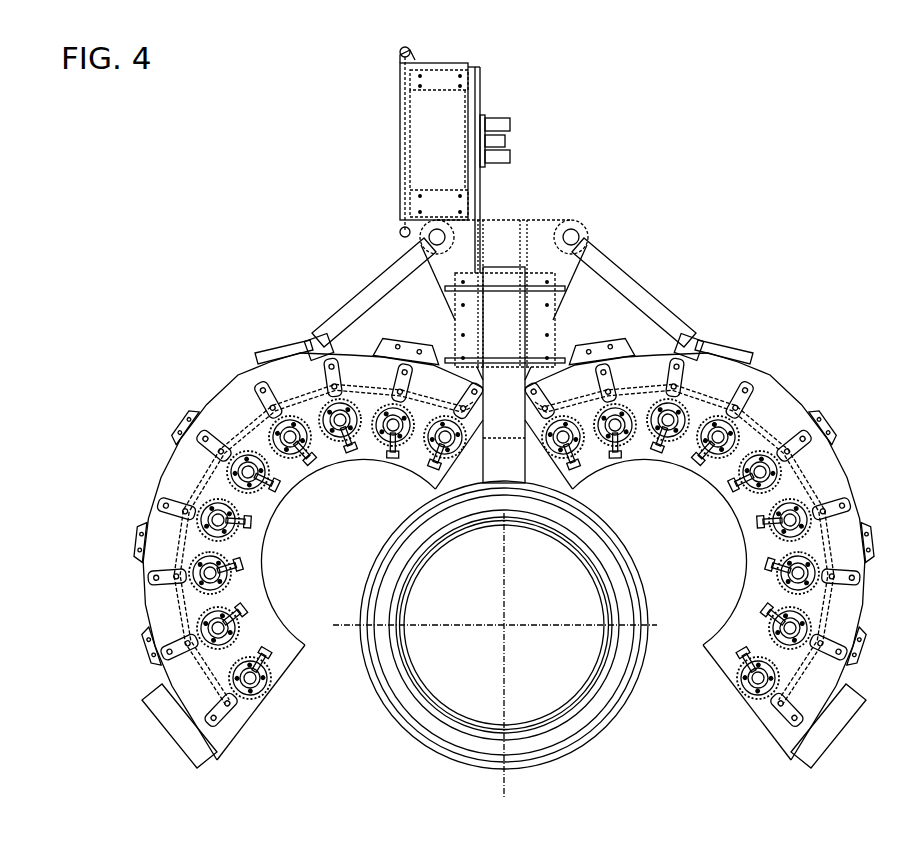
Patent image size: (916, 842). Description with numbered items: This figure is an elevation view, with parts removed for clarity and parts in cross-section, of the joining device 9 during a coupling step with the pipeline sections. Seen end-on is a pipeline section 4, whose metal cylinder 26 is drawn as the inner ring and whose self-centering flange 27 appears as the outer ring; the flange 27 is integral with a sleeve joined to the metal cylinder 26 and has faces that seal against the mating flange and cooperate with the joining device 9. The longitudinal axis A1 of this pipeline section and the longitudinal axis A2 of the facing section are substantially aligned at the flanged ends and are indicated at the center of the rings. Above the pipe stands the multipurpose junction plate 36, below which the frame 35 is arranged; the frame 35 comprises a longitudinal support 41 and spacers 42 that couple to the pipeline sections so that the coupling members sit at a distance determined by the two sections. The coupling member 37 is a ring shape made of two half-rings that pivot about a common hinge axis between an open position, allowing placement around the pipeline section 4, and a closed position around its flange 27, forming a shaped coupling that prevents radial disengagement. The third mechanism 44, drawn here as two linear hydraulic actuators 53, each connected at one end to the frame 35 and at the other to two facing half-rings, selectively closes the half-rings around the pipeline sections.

The joining device 9 is at (762, 183).
The multipurpose junction plate 36 is at (512, 91).
The longitudinal support 41 is at (543, 222).
The spacer 42 is at (513, 368).
The hydraulic actuator 53 is at (346, 294).
The frame 35 is at (270, 250).
The third mechanism 44 is at (292, 305).
The coupling member 37 is at (866, 466).
The pipeline section 4 is at (616, 734).
The metal cylinder 26 is at (465, 718).
The flange 27 is at (618, 697).
The longitudinal axis A1 is at (504, 625).
The longitudinal axis A2 is at (504, 625).